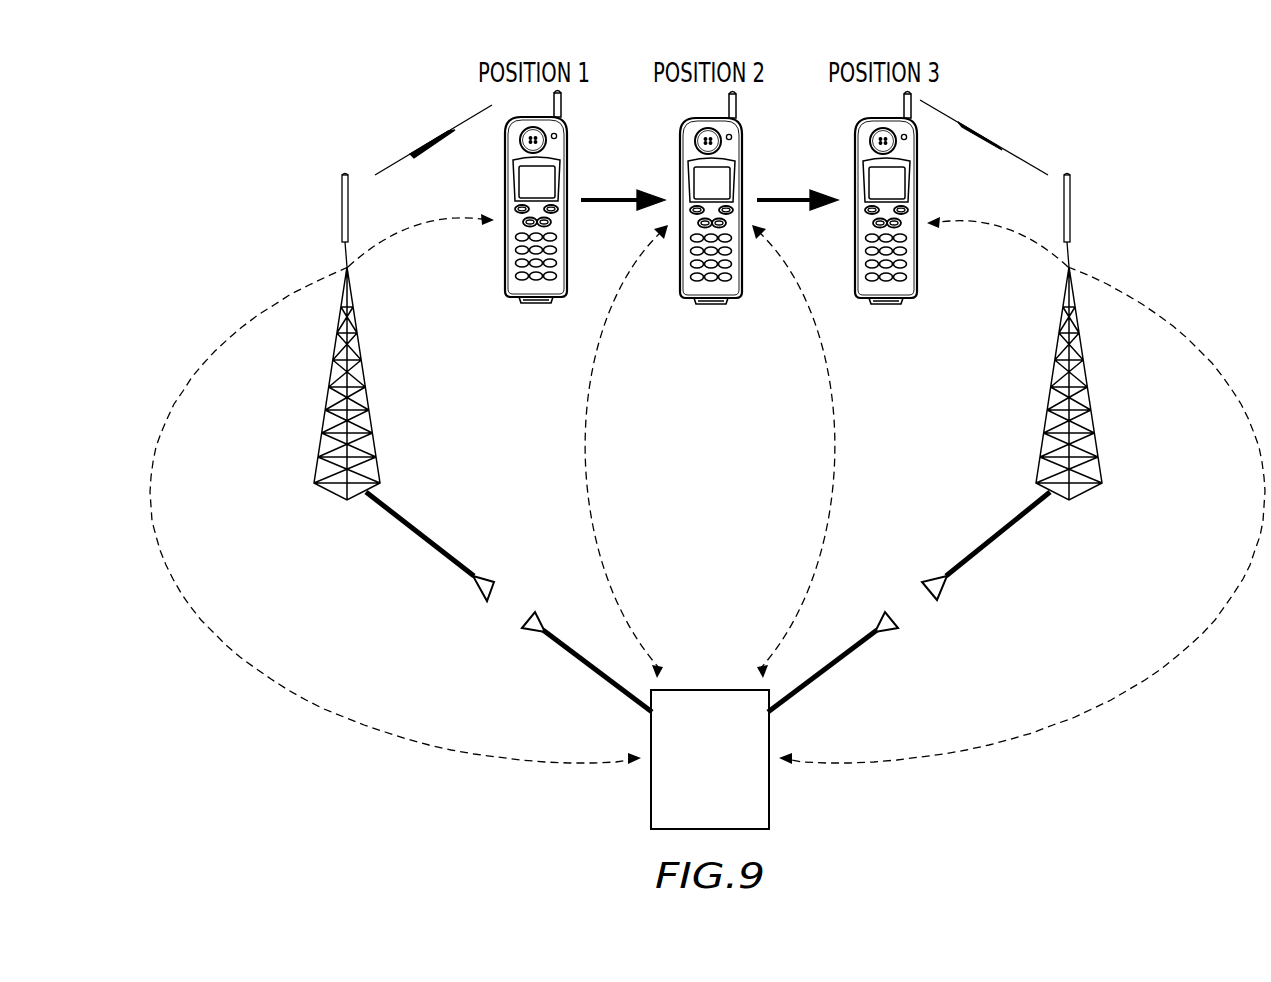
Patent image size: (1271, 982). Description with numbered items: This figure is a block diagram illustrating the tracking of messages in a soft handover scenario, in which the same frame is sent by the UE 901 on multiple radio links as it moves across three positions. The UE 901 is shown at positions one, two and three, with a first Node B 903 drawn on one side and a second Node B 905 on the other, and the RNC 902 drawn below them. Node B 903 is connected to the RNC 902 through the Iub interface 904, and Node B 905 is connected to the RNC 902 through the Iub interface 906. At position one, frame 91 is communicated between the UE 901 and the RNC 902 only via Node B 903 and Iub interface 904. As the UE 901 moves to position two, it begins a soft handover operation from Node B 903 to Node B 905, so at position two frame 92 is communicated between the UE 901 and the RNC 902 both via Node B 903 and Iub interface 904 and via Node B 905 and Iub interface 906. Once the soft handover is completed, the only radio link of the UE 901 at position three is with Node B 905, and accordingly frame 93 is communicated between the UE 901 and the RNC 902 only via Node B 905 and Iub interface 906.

The UE 901 is at (537, 303).
The RNC 902 is at (733, 797).
The Node B 903 is at (370, 363).
The Iub interface 904 is at (413, 538).
The Node B 905 is at (1056, 363).
The Iub interface 906 is at (1005, 538).
The frame 91 is at (300, 680).
The frame 92 is at (578, 478).
The frame 93 is at (1123, 680).